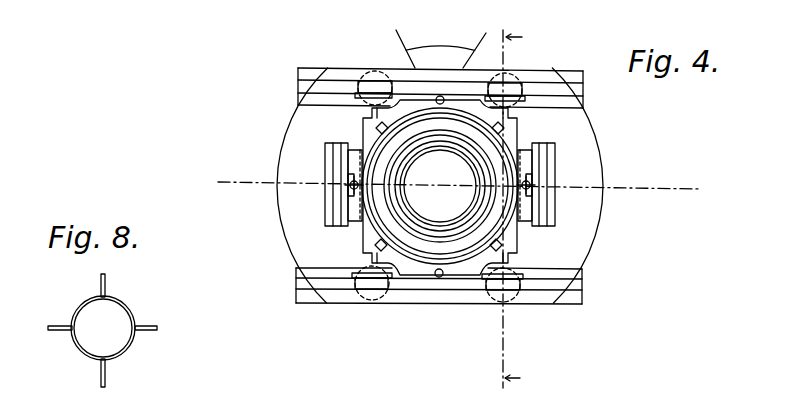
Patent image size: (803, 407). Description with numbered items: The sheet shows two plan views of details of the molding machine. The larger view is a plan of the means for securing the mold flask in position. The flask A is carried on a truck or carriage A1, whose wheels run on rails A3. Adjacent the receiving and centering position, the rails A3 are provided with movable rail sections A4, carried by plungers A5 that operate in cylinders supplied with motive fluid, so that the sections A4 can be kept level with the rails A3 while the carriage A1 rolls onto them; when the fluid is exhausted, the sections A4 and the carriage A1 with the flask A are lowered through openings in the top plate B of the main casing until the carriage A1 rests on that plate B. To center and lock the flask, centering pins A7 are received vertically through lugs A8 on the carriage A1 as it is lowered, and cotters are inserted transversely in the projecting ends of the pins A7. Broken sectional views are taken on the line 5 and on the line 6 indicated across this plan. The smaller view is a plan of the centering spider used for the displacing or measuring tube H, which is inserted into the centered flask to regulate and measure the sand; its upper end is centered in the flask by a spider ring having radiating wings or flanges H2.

In FIG. 4, the flask A is at (375, 232).
In FIG. 4, the truck or carriage A1 is at (516, 128).
In FIG. 4, the rails A3 is at (305, 88).
In FIG. 4, the movable rail sections A4 is at (360, 88).
In FIG. 4, the plungers A5 is at (372, 72).
In FIG. 4, the centering pins A7 is at (345, 183).
In FIG. 4, the lugs A8 is at (352, 211).
In FIG. 4, the top plate B is at (585, 131).
In FIG. 4, the section line 5- 5 is at (456, 185).
In FIG. 4, the section line 6- 6 is at (509, 208).
In FIG. 8, the displacing or measuring tube H is at (75, 352).
In FIG. 8, the radiating wings or flanges H2 is at (103, 288).